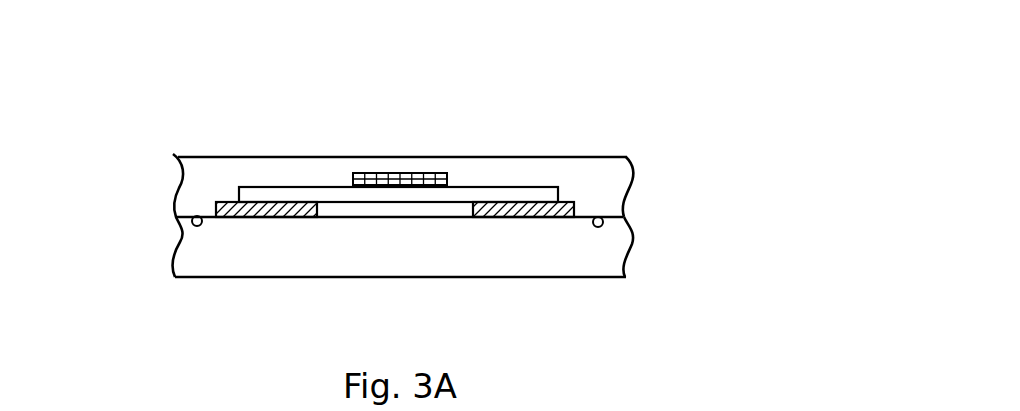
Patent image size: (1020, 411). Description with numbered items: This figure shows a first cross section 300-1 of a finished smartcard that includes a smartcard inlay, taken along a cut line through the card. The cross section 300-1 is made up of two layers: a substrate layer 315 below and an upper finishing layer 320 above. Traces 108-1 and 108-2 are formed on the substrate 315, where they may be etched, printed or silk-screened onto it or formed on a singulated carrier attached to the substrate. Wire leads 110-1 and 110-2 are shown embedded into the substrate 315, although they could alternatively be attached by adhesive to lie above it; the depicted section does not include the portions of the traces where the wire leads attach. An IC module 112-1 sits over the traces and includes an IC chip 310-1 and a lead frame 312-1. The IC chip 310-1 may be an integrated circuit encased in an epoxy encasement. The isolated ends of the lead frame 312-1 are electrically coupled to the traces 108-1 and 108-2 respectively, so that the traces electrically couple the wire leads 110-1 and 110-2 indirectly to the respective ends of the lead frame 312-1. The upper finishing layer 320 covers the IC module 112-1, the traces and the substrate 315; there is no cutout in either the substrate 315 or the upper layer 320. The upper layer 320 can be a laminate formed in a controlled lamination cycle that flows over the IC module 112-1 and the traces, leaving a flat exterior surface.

The first cross section 300-1 is at (406, 162).
The upper finishing layer 320 is at (630, 169).
The substrate layer 315 is at (626, 277).
The trace 108-1 is at (226, 201).
The trace 108-2 is at (577, 202).
The wire lead 110-1 is at (193, 225).
The wire lead 110-2 is at (603, 226).
The lead frame 312-1 is at (468, 187).
The IC chip 310-1 is at (398, 173).
The IC module 112-1 is at (350, 171).